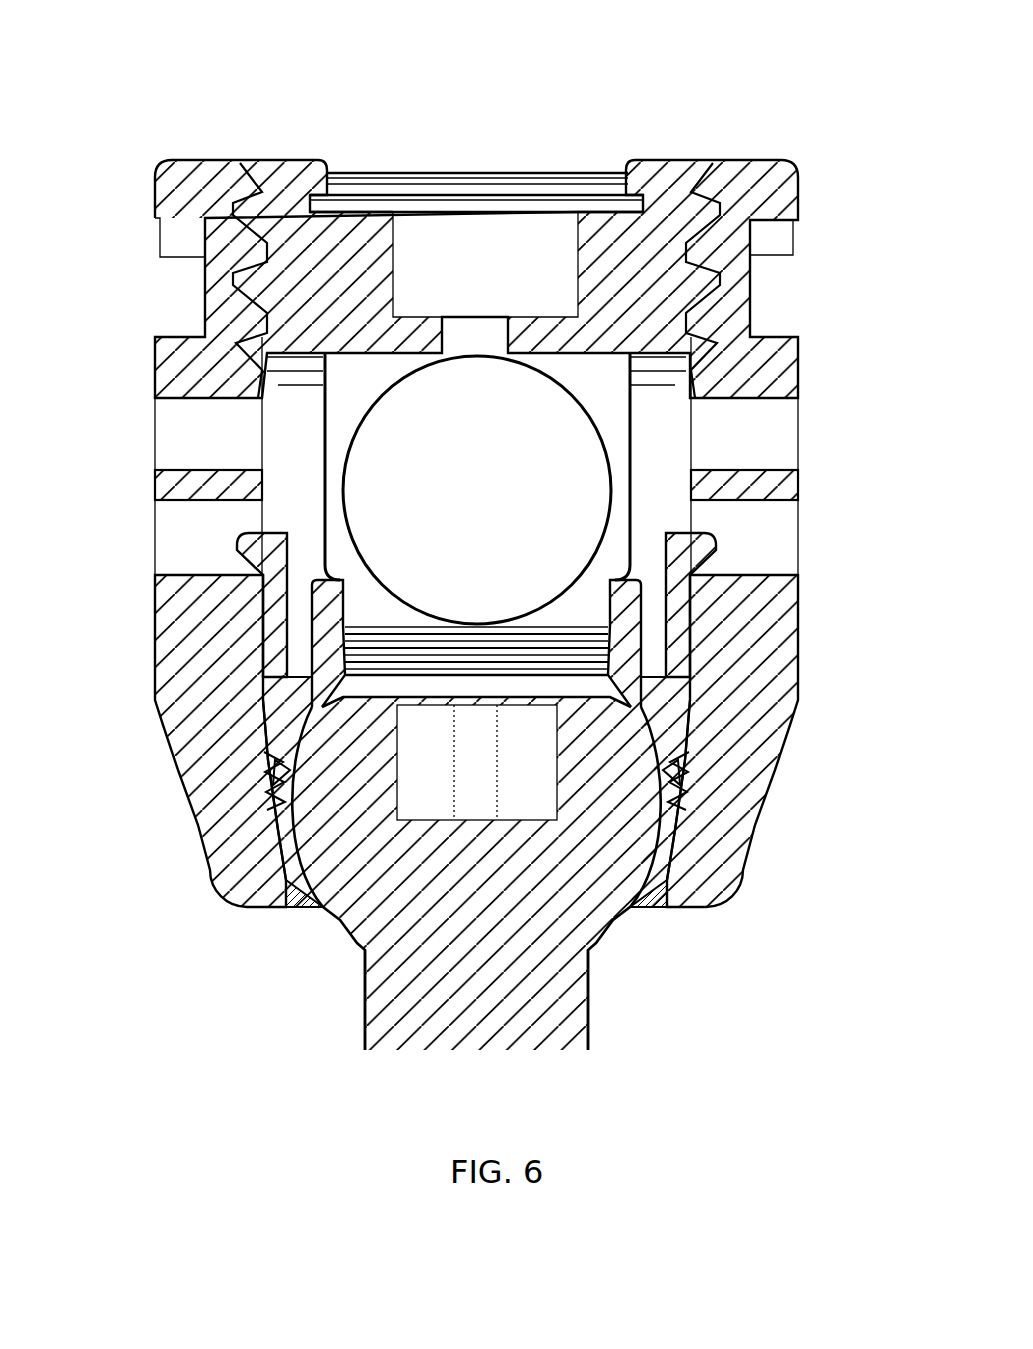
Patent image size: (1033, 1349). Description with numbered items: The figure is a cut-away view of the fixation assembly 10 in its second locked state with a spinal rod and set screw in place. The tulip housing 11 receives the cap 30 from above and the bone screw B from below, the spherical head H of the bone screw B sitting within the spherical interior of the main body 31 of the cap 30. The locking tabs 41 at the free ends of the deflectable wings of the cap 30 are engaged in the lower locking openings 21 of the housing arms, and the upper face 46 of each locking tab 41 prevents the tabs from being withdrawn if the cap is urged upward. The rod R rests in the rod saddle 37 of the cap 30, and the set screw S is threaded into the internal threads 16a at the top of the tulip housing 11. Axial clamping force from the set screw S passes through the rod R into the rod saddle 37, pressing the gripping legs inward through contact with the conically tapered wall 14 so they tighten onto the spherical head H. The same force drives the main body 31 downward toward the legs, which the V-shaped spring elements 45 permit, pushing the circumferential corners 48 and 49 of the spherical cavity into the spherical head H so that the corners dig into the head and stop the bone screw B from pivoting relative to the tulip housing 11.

The fixation assembly 10 is at (486, 529).
The internal threads 16a is at (258, 217).
The set screw S is at (532, 170).
The tulip housing 11 is at (765, 170).
The rod R is at (536, 445).
The rod saddle 37 is at (405, 597).
The lower locking openings 21 is at (760, 535).
The locking tab 41 is at (248, 562).
The main body 31 is at (307, 697).
The cap 30 is at (272, 704).
The conically tapered wall 14 is at (287, 853).
The circumferential corner 48 is at (653, 737).
The circumferential corner 49 is at (680, 773).
The spring elements 45 is at (680, 790).
The upper face 46 is at (297, 897).
The spherical head H is at (573, 893).
The bone screw B is at (356, 1010).